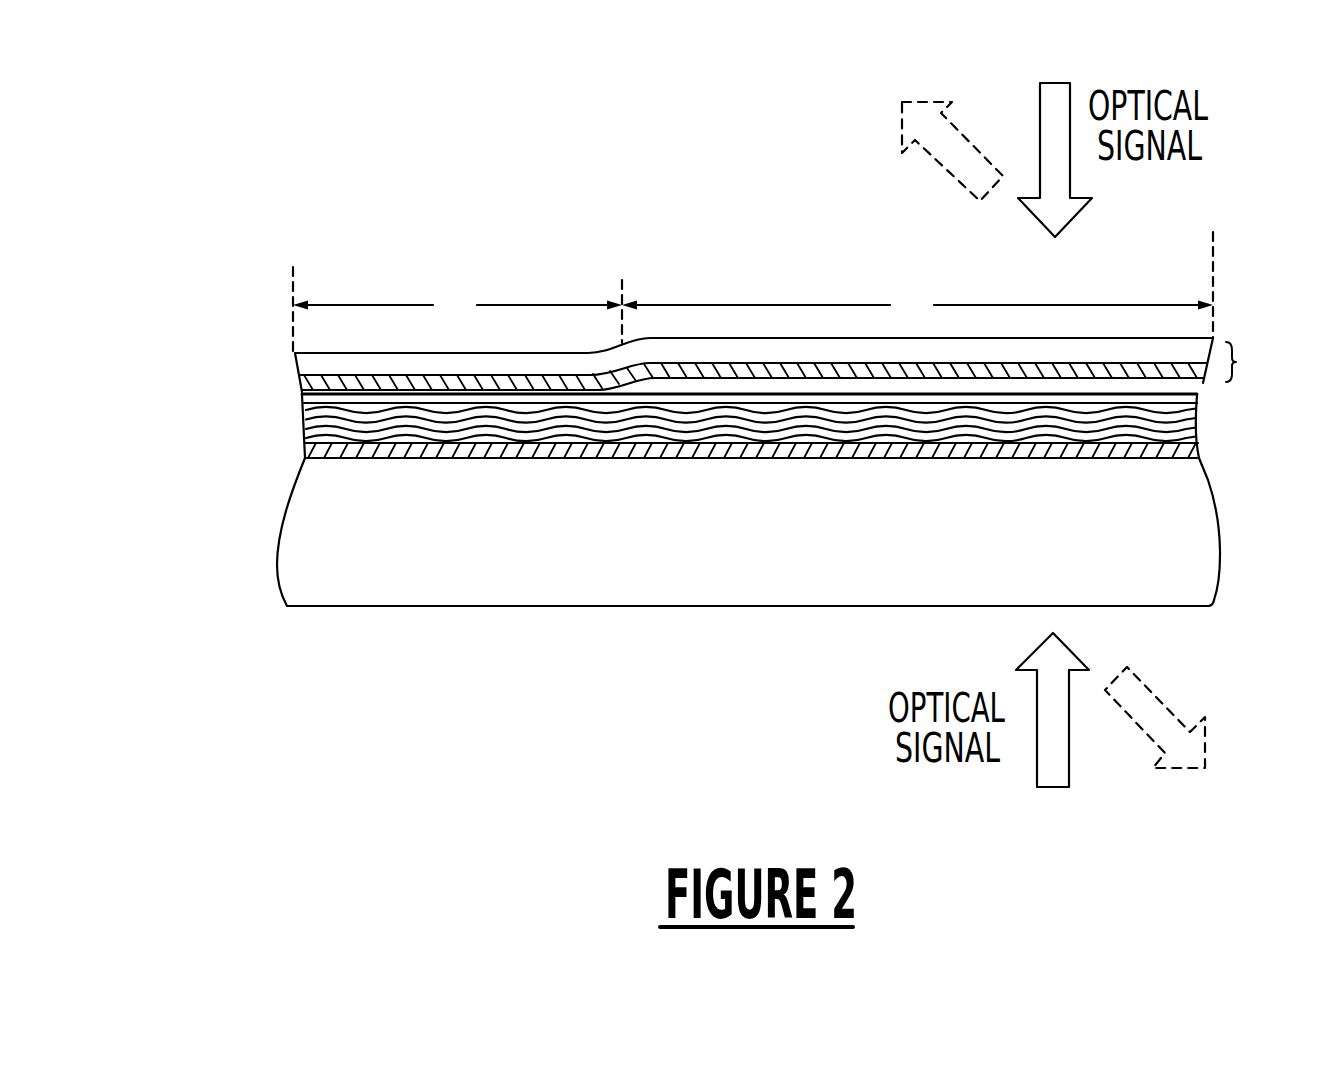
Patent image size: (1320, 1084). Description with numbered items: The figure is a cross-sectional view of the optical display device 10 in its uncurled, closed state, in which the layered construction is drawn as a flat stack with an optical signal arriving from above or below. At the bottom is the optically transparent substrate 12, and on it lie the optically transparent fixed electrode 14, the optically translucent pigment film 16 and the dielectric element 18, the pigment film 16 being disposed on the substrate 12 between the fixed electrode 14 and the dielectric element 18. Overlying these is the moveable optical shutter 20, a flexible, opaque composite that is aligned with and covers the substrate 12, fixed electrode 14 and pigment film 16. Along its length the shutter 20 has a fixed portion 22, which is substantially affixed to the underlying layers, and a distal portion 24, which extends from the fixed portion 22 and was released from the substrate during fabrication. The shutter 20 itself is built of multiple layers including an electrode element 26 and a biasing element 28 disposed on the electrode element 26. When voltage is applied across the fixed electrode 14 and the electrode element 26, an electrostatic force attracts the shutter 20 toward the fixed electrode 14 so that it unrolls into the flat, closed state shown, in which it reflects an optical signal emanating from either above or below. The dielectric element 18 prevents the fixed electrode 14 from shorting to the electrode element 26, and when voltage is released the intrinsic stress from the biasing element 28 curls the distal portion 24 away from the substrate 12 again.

The optical display device 10 is at (670, 182).
The optically transparent substrate 12 is at (278, 558).
The optically transparent fixed electrode 14 is at (305, 452).
The optically translucent pigment film 16 is at (305, 425).
The dielectric element 18 is at (302, 399).
The moveable optical shutter 20 is at (1250, 364).
The fixed portion 22 is at (457, 305).
The distal portion 24 is at (917, 307).
The electrode element 26 is at (302, 390).
The biasing element 28 is at (298, 362).